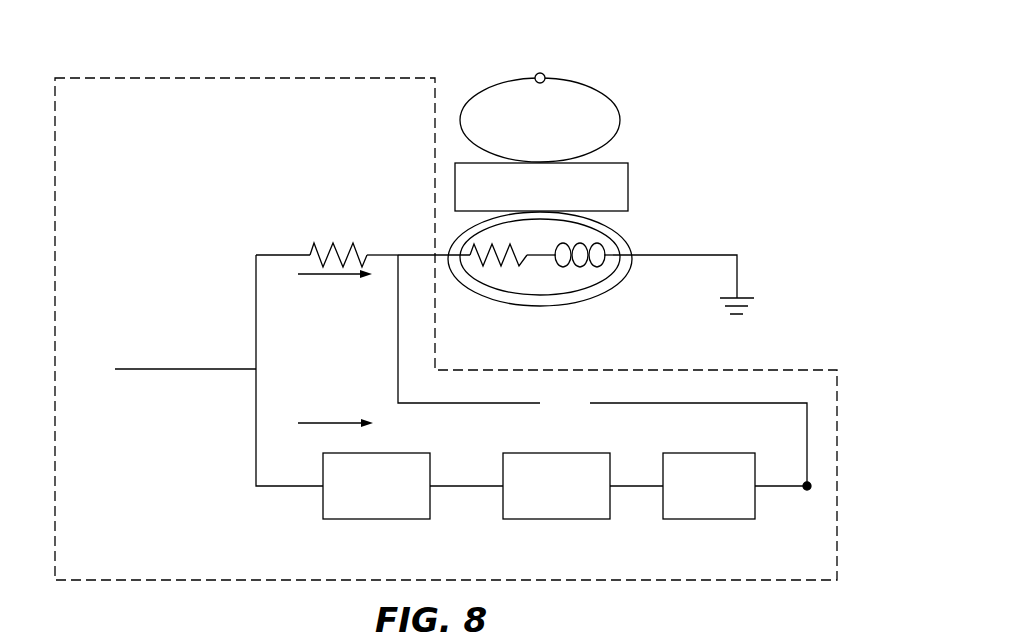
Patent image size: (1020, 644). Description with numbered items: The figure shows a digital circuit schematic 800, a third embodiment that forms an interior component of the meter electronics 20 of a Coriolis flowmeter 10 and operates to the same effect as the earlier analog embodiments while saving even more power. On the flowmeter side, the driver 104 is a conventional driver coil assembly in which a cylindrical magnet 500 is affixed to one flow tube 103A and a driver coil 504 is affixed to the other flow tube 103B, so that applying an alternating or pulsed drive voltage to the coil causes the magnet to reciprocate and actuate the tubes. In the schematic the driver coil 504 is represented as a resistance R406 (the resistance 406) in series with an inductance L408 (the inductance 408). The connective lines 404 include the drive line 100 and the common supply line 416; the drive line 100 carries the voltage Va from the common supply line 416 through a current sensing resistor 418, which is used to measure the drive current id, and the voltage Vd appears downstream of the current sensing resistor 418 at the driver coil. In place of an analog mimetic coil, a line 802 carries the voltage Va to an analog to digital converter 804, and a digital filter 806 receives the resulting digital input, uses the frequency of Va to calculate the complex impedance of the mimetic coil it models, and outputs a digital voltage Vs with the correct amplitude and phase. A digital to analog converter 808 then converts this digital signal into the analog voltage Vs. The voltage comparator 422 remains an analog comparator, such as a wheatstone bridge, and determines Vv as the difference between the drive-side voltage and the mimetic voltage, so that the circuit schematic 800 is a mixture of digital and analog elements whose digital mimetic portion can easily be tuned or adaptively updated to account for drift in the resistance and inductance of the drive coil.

The digital circuit schematic 800 is at (391, 57).
The meter electronics 20 is at (192, 77).
The driver 104 is at (605, 82).
The flow tube 103A is at (620, 118).
The cylindrical magnet 500 is at (544, 73).
The Coriolis flowmeter 10 is at (628, 185).
The flow tube 103B is at (633, 245).
The driver coil 504 is at (613, 273).
The resistance 406 is at (492, 295).
The resistance R406 is at (495, 264).
The inductance 408 is at (581, 294).
The inductance L408 is at (576, 263).
The connective lines 404 is at (269, 245).
The current sensing resistor 418 is at (348, 211).
The drive line 100 is at (256, 285).
The common supply line 416 is at (150, 368).
The voltage comparator 422 is at (398, 368).
The line 802 is at (256, 438).
The analog to digital converter 804 is at (381, 521).
The digital filter 806 is at (568, 521).
The digital to analog converter 808 is at (728, 521).